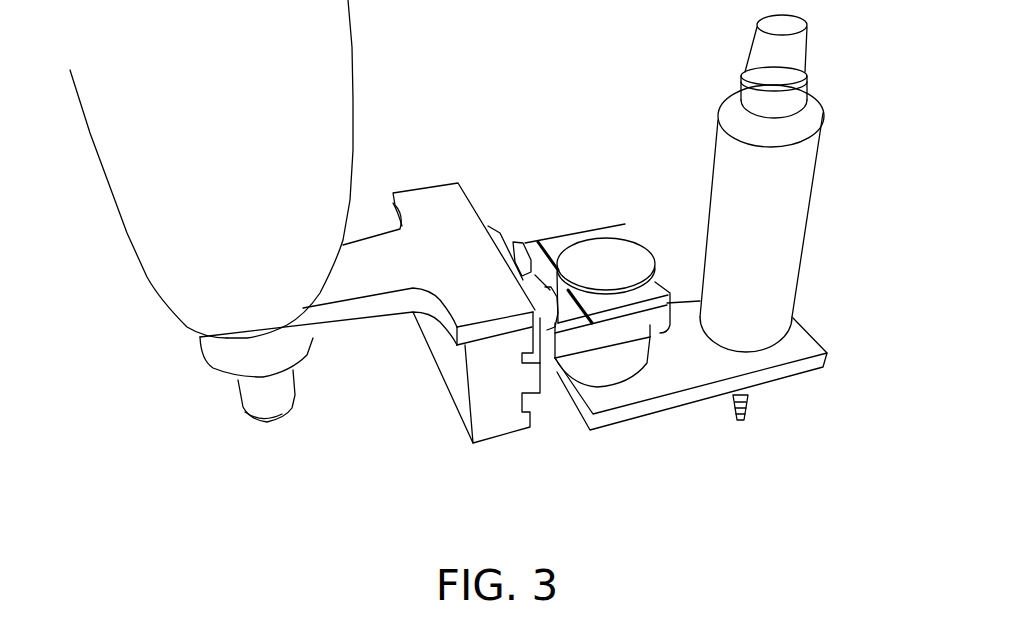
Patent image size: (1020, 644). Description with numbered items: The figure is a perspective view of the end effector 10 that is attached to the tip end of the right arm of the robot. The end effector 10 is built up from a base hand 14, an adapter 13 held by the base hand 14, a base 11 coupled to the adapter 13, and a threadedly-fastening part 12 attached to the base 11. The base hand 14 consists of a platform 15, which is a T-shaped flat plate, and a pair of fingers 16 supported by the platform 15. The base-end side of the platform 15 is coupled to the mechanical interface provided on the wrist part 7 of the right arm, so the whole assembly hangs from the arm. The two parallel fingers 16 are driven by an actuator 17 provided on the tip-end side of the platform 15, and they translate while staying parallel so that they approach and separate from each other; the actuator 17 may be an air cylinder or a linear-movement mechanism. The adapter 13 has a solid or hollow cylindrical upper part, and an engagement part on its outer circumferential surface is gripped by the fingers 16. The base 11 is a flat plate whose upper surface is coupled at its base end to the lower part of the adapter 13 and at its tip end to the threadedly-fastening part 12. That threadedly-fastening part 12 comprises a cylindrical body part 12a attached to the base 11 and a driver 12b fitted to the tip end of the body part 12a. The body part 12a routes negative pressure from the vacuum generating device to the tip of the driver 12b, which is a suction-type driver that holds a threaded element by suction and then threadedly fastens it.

The wrist part 7 is at (338, 52).
The end effector 10 is at (730, 272).
The base 11 is at (727, 401).
The threadedly-fastening part 12 is at (808, 183).
The body part 12a is at (797, 237).
The driver 12b is at (736, 422).
The adapter 13 is at (620, 255).
The base hand 14 is at (494, 216).
The platform 15 is at (437, 205).
The fingers 16 is at (563, 240).
The actuator 17 is at (495, 417).